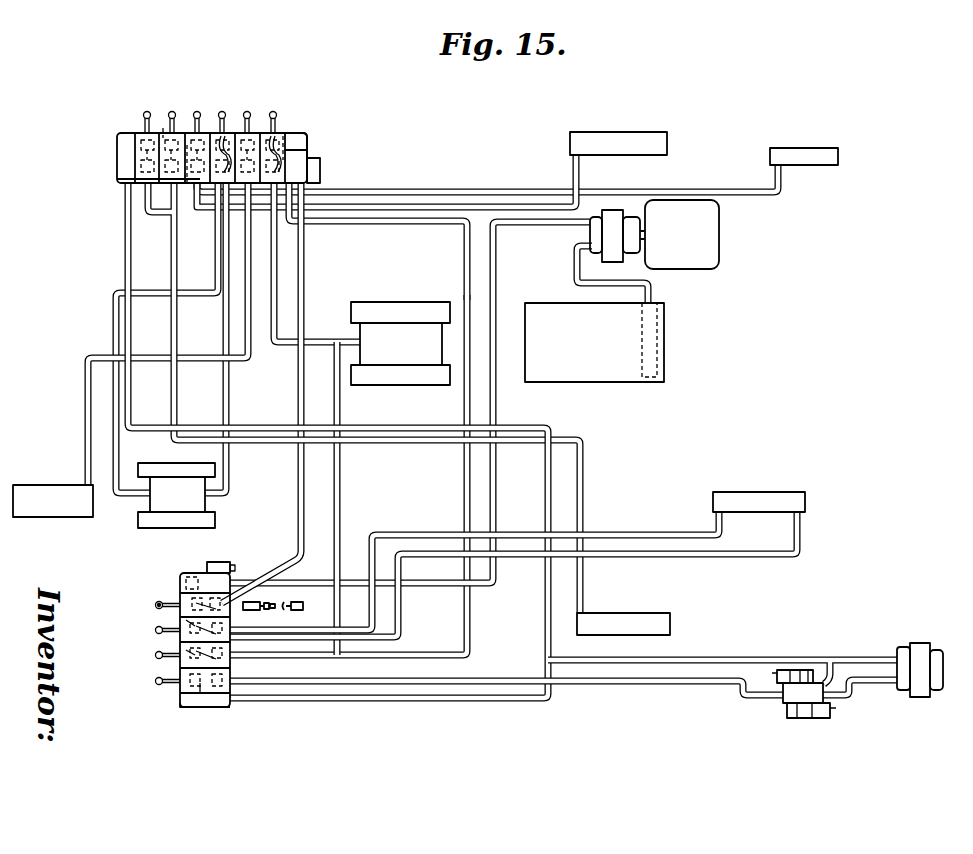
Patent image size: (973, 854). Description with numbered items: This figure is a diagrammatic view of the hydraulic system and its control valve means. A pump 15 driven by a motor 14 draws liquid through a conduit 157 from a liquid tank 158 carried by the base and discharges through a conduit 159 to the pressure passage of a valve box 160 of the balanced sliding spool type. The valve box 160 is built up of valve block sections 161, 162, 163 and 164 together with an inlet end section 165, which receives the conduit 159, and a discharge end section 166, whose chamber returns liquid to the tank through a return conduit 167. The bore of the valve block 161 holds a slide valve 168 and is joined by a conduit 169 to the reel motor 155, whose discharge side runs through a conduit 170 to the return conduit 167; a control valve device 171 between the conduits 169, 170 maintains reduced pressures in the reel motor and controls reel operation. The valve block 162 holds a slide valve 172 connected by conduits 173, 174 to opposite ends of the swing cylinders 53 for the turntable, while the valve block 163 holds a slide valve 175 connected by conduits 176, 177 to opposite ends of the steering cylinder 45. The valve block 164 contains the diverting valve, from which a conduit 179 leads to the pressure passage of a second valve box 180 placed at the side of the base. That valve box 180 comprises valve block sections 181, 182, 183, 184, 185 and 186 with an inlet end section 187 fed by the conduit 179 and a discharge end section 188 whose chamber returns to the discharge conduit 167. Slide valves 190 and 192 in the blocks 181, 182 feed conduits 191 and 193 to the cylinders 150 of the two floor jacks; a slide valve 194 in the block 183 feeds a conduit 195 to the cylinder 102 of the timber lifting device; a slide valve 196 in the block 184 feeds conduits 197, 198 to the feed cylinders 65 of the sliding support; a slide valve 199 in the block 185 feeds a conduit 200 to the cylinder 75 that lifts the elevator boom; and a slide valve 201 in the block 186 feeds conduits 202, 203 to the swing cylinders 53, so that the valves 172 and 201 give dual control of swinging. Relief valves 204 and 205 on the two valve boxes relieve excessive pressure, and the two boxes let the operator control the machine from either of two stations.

The motor 14 is at (708, 245).
The pump 15 is at (592, 233).
The steering cylinder 45 is at (741, 493).
The swing cylinders 53 is at (412, 317).
The feed cylinders 65 is at (183, 468).
The cylinder 75 is at (36, 488).
The cylinder 102 is at (805, 141).
The cylinder 150 is at (612, 133).
The reel motor 155 is at (917, 649).
The conduit 157 is at (580, 267).
The liquid tank 158 is at (664, 327).
The conduit 159 is at (498, 316).
The valve box 160 is at (192, 692).
The valve block 161 is at (200, 684).
The valve block 162 is at (184, 659).
The valve block 163 is at (184, 631).
The valve block 164 is at (190, 603).
The inlet end section 165 is at (200, 576).
The discharge end section 166 is at (216, 703).
The return conduit 167 is at (340, 700).
The slide valve 168 is at (200, 688).
The conduit 169 is at (414, 682).
The conduit 170 is at (715, 660).
The control valve device 171 is at (797, 696).
The slide valve 172 is at (185, 656).
The conduit 173 is at (343, 525).
The conduit 174 is at (466, 628).
The slide valve 175 is at (186, 623).
The conduit 176 is at (398, 536).
The conduit 177 is at (667, 557).
The conduit 179 is at (300, 516).
The valve box 180 is at (307, 134).
The valve block 181 is at (134, 133).
The valve block 182 is at (177, 132).
The valve block 183 is at (201, 132).
The valve block 184 is at (228, 132).
The valve block 185 is at (270, 132).
The valve block 186 is at (266, 137).
The inlet end section 187 is at (309, 156).
The discharge end section 188 is at (117, 153).
The slide valve 190 is at (118, 180).
The conduit 191 is at (452, 205).
The slide valve 192 is at (163, 128).
The conduit 193 is at (176, 402).
The slide valve 194 is at (187, 183).
The conduit 195 is at (390, 193).
The slide valve 196 is at (226, 150).
The conduit 197 is at (190, 294).
The conduit 198 is at (229, 326).
The slide valve 199 is at (253, 132).
The conduit 200 is at (87, 386).
The slide valve 201 is at (284, 134).
The conduit 202 is at (280, 348).
The conduit 203 is at (435, 224).
The relief valve 204 is at (220, 566).
The relief valve 205 is at (321, 170).